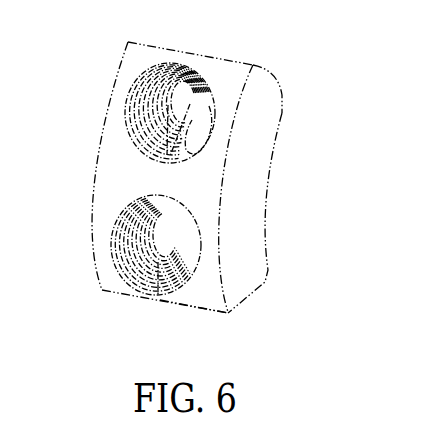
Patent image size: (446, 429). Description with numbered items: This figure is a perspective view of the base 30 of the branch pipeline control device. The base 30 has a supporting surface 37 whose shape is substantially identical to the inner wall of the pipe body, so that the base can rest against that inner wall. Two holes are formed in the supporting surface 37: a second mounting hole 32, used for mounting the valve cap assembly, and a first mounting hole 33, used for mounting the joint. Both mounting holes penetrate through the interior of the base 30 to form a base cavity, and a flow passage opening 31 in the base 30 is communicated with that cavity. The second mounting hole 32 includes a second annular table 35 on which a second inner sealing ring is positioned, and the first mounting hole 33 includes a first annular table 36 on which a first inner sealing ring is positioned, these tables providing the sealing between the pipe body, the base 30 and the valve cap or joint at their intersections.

The base 30 is at (245, 208).
The flow passage opening 31 is at (203, 110).
The second mounting hole 32 is at (171, 93).
The first mounting hole 33 is at (158, 296).
The second annular table 35 is at (135, 93).
The first annular table 36 is at (120, 249).
The supporting surface 37 is at (205, 283).